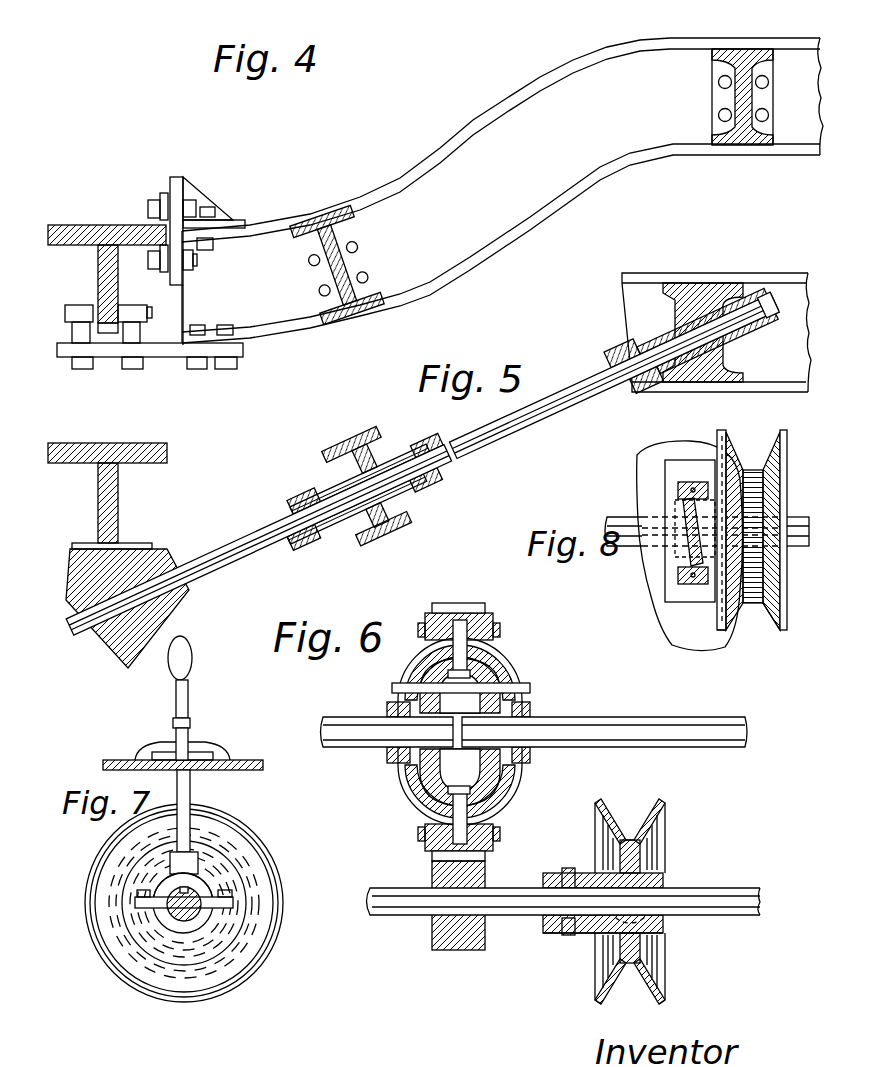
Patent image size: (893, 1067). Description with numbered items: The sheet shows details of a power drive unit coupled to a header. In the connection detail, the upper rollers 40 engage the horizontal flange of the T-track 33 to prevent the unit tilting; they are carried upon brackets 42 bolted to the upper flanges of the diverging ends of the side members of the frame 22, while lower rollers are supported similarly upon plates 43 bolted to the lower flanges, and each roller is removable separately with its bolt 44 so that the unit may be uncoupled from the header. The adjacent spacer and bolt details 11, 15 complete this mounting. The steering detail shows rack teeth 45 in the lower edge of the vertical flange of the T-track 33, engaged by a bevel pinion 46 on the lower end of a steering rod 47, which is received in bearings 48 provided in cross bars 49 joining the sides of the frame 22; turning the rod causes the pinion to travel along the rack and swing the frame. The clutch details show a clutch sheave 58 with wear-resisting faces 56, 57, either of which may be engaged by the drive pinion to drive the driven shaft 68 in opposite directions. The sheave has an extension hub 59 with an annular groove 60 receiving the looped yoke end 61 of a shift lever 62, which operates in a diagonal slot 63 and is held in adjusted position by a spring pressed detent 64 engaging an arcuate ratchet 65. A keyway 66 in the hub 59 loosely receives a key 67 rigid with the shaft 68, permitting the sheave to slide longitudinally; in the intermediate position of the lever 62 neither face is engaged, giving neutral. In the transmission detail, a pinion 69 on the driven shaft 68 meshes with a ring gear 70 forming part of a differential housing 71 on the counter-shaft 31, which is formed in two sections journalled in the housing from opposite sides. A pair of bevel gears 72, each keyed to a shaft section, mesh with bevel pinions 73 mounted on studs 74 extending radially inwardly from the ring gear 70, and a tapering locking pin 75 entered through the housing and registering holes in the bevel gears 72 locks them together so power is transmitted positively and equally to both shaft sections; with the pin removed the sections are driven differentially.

In FIG. 4, the bolt 11 is at (68, 311).
In FIG. 4, the spacer block 15 is at (113, 334).
In FIG. 4, the frame 22 is at (302, 221).
In FIG. 5, the frame 22 is at (650, 278).
In FIG. 6, the counter-shaft 31 is at (339, 717).
In FIG. 4, the T-track 33 is at (77, 225).
In FIG. 5, the T-track 33 is at (133, 445).
In FIG. 4, the rollers 40 is at (160, 193).
In FIG. 4, the brackets 42 is at (203, 199).
In FIG. 4, the plates 43 is at (108, 358).
In FIG. 4, the bolt 44 is at (197, 262).
In FIG. 5, the rack teeth 45 is at (120, 546).
In FIG. 5, the bevel pinion 46 is at (171, 556).
In FIG. 5, the steering rod 47 is at (557, 408).
In FIG. 5, the bearings 48 is at (333, 479).
In FIG. 4, the cross bars 49 is at (360, 231).
In FIG. 5, the cross bars 49 is at (411, 515).
In FIG. 8, the clutch face 56 is at (725, 630).
In FIG. 6, the clutch face 56 is at (622, 1009).
In FIG. 8, the clutch face 57 is at (776, 621).
In FIG. 6, the clutch face 57 is at (654, 1002).
In FIG. 8, the clutch sheave 58 is at (787, 492).
In FIG. 6, the clutch sheave 58 is at (647, 853).
In FIG. 7, the clutch sheave 58 is at (279, 888).
In FIG. 6, the extension hub 59 is at (544, 928).
In FIG. 7, the extension hub 59 is at (204, 917).
In FIG. 6, the annular groove 60 is at (551, 873).
In FIG. 6, the looped yoke end 61 is at (569, 868).
In FIG. 7, the looped yoke end 61 is at (198, 887).
In FIG. 8, the shift lever 62 is at (688, 546).
In FIG. 7, the shift lever 62 is at (189, 706).
In FIG. 8, the diagonal slot 63 is at (680, 507).
In FIG. 7, the spring pressed detent 64 is at (167, 742).
In FIG. 7, the arcuate ratchet 65 is at (214, 758).
In FIG. 6, the keyway 66 is at (655, 893).
In FIG. 6, the key 67 is at (652, 874).
In FIG. 7, the key 67 is at (199, 883).
In FIG. 8, the driven shaft 68 is at (618, 546).
In FIG. 6, the driven shaft 68 is at (376, 916).
In FIG. 7, the driven shaft 68 is at (172, 914).
In FIG. 6, the pinion 69 is at (432, 942).
In FIG. 6, the ring gear 70 is at (456, 608).
In FIG. 6, the differential housing 71 is at (515, 665).
In FIG. 6, the bevel gears 72 is at (398, 781).
In FIG. 6, the bevel pinions 73 is at (431, 648).
In FIG. 6, the studs 74 is at (422, 622).
In FIG. 6, the locking pin 75 is at (392, 683).